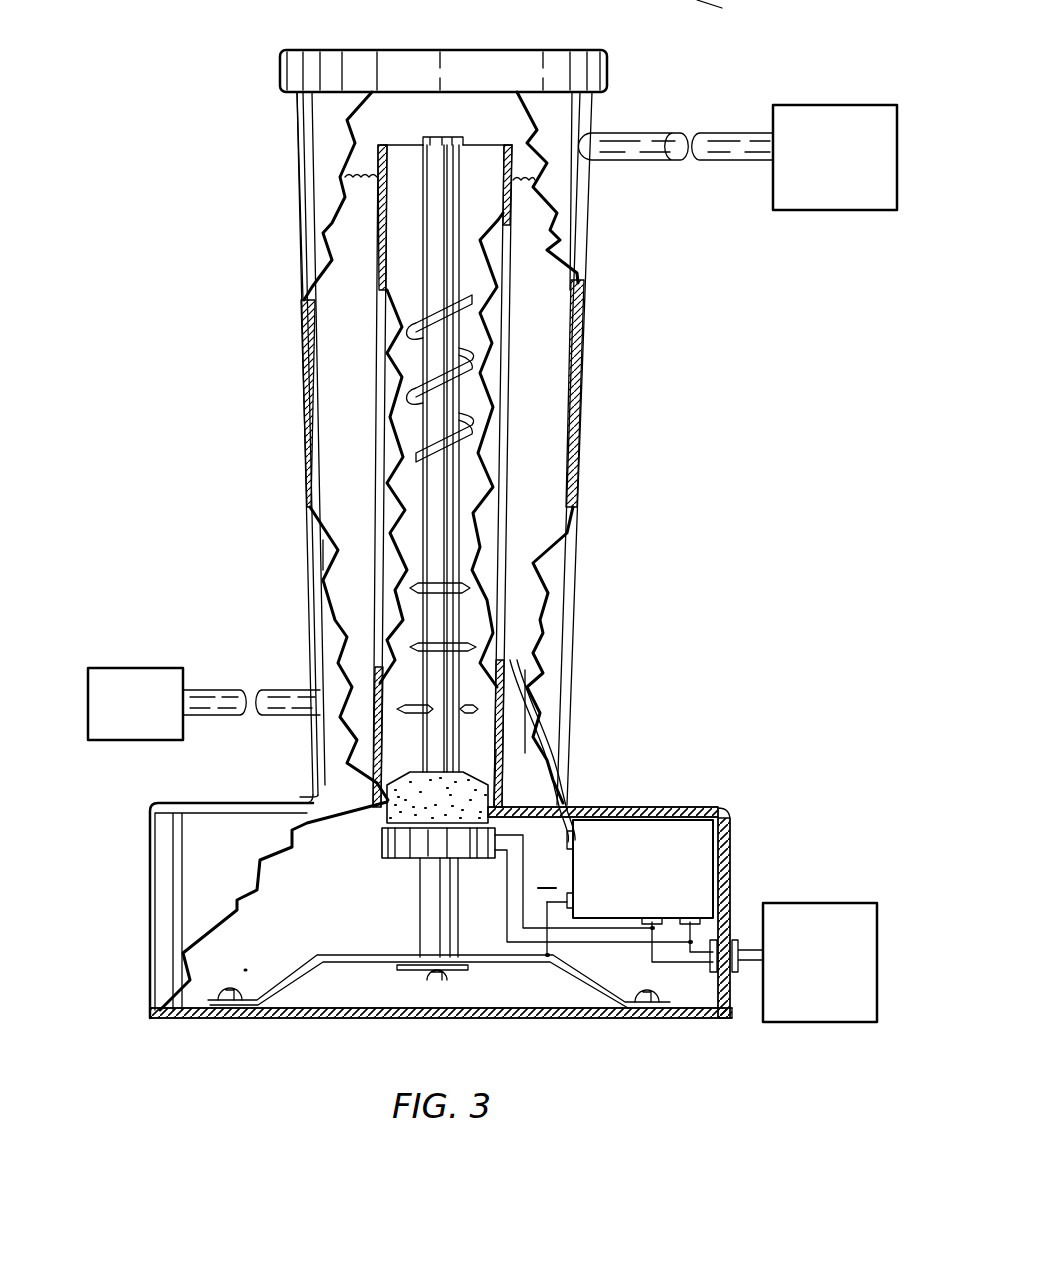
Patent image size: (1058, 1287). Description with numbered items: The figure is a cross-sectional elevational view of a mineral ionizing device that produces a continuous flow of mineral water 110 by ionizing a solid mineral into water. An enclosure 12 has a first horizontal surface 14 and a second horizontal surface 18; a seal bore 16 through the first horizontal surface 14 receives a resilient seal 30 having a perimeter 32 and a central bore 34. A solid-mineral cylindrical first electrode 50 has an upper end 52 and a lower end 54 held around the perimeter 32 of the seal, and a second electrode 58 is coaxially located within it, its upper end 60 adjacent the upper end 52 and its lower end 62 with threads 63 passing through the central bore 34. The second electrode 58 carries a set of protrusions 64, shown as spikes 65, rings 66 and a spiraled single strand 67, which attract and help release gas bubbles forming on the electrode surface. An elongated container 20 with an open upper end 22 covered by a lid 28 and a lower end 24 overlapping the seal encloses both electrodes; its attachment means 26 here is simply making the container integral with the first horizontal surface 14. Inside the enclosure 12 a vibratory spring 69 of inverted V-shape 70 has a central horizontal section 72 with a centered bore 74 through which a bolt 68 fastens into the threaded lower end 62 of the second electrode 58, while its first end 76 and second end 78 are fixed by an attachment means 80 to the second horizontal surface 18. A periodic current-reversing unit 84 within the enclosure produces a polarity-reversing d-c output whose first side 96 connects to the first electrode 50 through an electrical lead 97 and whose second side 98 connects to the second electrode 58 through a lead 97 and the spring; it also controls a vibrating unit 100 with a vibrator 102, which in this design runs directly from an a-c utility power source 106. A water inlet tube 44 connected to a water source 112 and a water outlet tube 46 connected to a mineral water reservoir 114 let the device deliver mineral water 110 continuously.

The enclosure 12 is at (733, 820).
The first horizontal surface 14 is at (697, 808).
The seal bore 16 is at (500, 783).
The second horizontal surface 18 is at (713, 1018).
The elongated container 20 is at (568, 245).
The open upper end 22 is at (295, 108).
The lower end 24 is at (560, 807).
The attachment means 26 is at (604, 752).
The lid 28 is at (609, 72).
The resilient seal 30 is at (497, 770).
The perimeter 32 is at (380, 796).
The central bore 34 is at (505, 750).
The water inlet tube 44 is at (267, 713).
The water outlet tube 46 is at (652, 160).
The solid-mineral cylindrical first electrode 50 is at (510, 320).
The upper end 52 is at (493, 160).
The lower end 54 is at (388, 782).
The second electrode 58 is at (440, 482).
The upper end 60 is at (420, 136).
The lower end 62 is at (264, 907).
The set of threads 63 is at (430, 947).
The set of protrusions 64 is at (435, 504).
The spikes 65 is at (405, 706).
The rings 66 is at (415, 587).
The single strand 67 is at (477, 357).
The bolt 68 is at (455, 976).
The vibratory spring 69 is at (439, 1010).
The inverted V-shape 70 is at (439, 1010).
The central horizontal section 72 is at (400, 968).
The centered bore 74 is at (435, 953).
The first end 76 is at (210, 1004).
The second end 78 is at (670, 1008).
The attachment means 80 is at (451, 1026).
The periodic current-reversing unit 84 is at (625, 872).
The first side 96 is at (587, 803).
The electrical lead 97 is at (520, 660).
The second side 98 is at (570, 1010).
The vibrating unit 100 is at (278, 832).
The vibrator 102 is at (387, 840).
The a-c utility power source 106 is at (793, 962).
The mineral water 110 is at (357, 193).
The water source 112 is at (135, 706).
The mineral water reservoir 114 is at (835, 157).